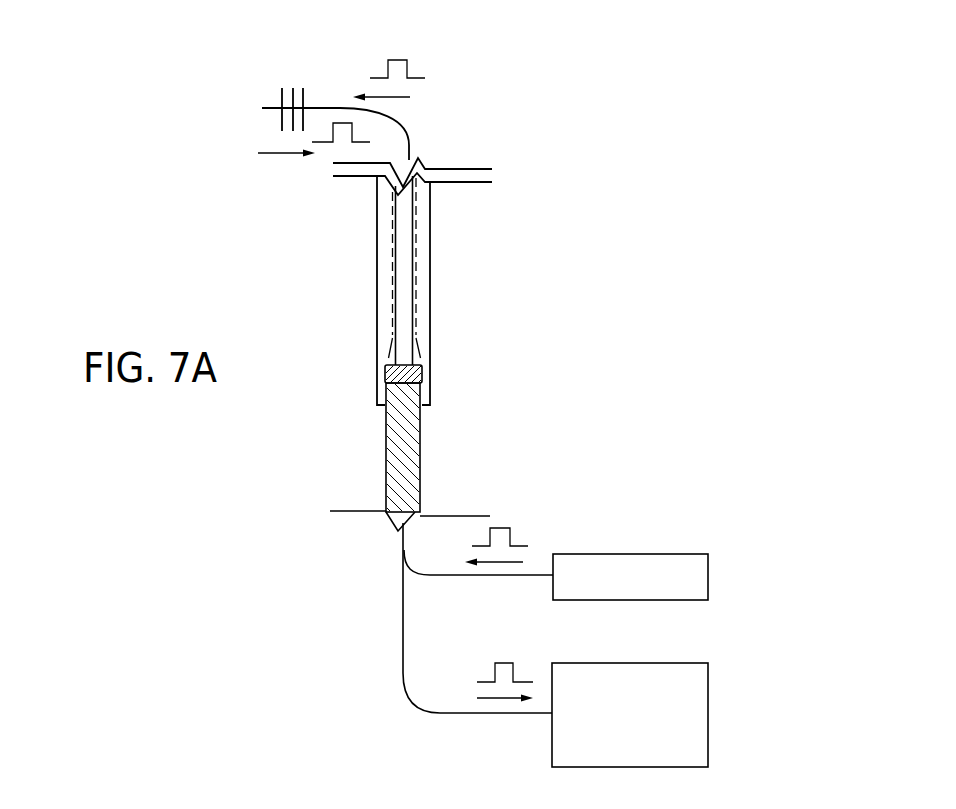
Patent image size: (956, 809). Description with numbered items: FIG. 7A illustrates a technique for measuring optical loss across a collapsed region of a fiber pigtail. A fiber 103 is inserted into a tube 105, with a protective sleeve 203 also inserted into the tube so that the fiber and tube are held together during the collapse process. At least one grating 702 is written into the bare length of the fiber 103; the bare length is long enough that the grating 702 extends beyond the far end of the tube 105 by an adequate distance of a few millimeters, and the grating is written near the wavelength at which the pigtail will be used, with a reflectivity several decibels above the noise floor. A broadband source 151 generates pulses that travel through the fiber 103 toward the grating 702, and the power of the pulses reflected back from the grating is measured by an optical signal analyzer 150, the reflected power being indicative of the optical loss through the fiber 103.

The grating 702 is at (258, 82).
The tube 105 is at (420, 227).
The fiber 103 is at (405, 282).
The protective sleeve 203 is at (408, 447).
The broadband source 151 is at (695, 577).
The optical signal analyzer 150 is at (695, 687).